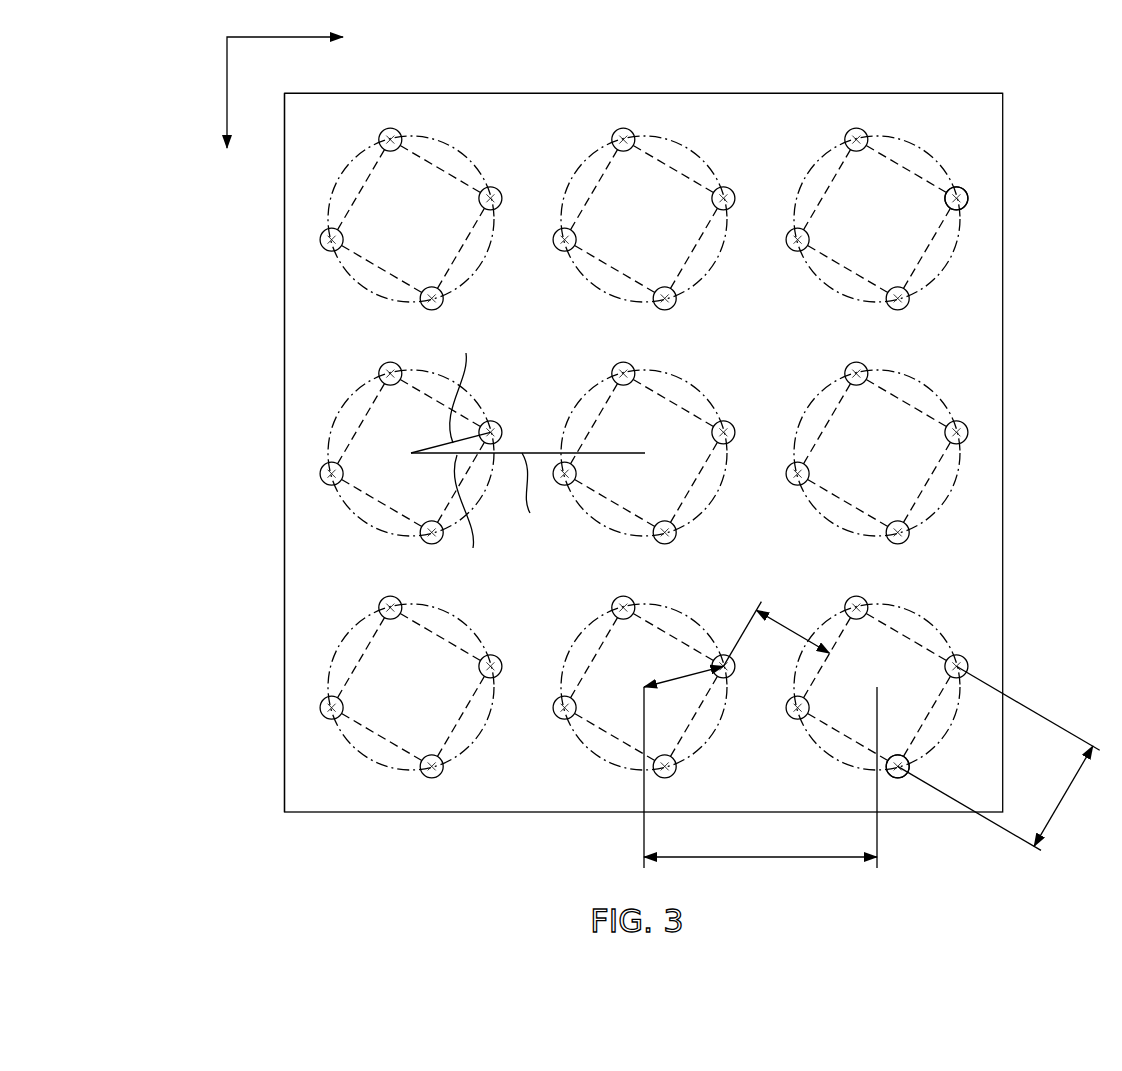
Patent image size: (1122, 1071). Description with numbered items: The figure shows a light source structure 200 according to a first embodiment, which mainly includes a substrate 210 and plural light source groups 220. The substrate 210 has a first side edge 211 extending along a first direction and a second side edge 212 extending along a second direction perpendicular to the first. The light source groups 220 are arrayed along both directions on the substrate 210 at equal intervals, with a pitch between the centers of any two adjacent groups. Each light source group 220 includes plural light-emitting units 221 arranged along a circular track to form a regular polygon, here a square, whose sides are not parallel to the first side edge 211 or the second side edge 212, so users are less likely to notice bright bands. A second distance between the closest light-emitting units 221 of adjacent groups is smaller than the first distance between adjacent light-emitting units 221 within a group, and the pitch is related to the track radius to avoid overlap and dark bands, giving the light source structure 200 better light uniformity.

The light source structure 200 is at (148, 88).
The substrate 210 is at (987, 268).
The first side edge 211 is at (737, 92).
The second side edge 212 is at (285, 421).
The light source group 220 is at (944, 147).
The light-emitting unit 221 is at (968, 200).